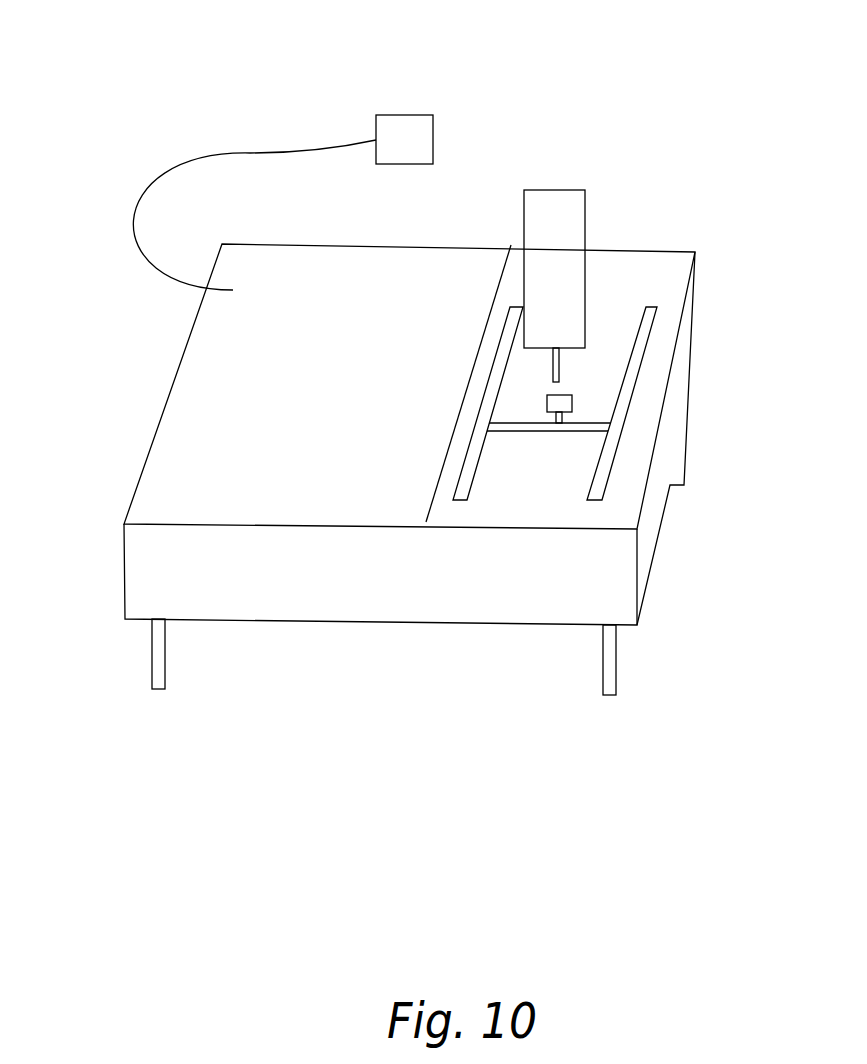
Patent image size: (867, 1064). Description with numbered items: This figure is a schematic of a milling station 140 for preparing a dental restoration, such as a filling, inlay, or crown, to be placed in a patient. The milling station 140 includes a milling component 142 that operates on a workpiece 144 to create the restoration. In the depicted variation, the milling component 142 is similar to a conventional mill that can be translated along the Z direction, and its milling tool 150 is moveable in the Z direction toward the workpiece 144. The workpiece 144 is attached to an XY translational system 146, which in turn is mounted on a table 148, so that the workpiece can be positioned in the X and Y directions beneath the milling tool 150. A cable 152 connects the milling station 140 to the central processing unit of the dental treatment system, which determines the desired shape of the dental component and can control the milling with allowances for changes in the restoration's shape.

The milling station 140 is at (647, 98).
The milling component 142 is at (557, 211).
The workpiece 144 is at (557, 403).
The XY translational system 146 is at (608, 431).
The table 148 is at (427, 588).
The milling tool 150 is at (558, 363).
The cable 152 is at (155, 177).